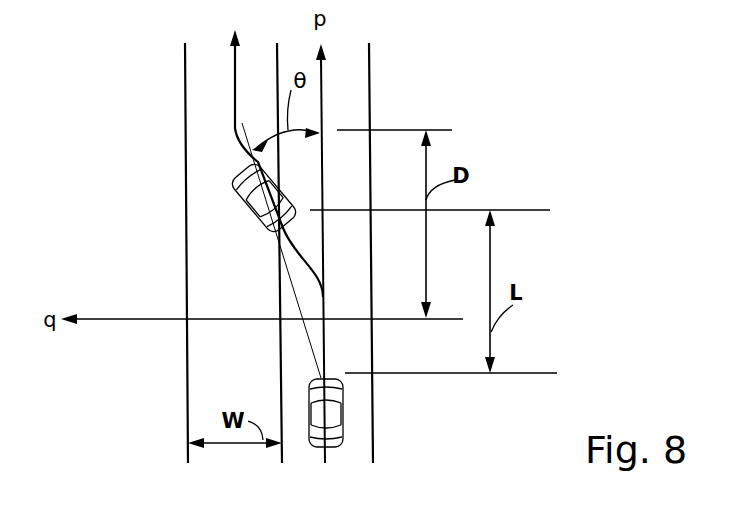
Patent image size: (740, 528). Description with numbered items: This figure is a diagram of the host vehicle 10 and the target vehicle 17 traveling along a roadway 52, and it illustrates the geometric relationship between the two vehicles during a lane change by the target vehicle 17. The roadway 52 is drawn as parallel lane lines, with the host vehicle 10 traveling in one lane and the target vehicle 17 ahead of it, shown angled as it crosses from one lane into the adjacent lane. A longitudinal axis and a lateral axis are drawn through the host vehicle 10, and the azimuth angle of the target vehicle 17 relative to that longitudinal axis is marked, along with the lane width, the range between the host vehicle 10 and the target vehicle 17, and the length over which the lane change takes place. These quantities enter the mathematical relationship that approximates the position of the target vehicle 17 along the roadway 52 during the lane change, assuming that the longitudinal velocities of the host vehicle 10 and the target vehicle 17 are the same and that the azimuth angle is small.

The host vehicle 10 is at (343, 412).
The target vehicle 17 is at (243, 200).
The roadway 52 is at (369, 72).